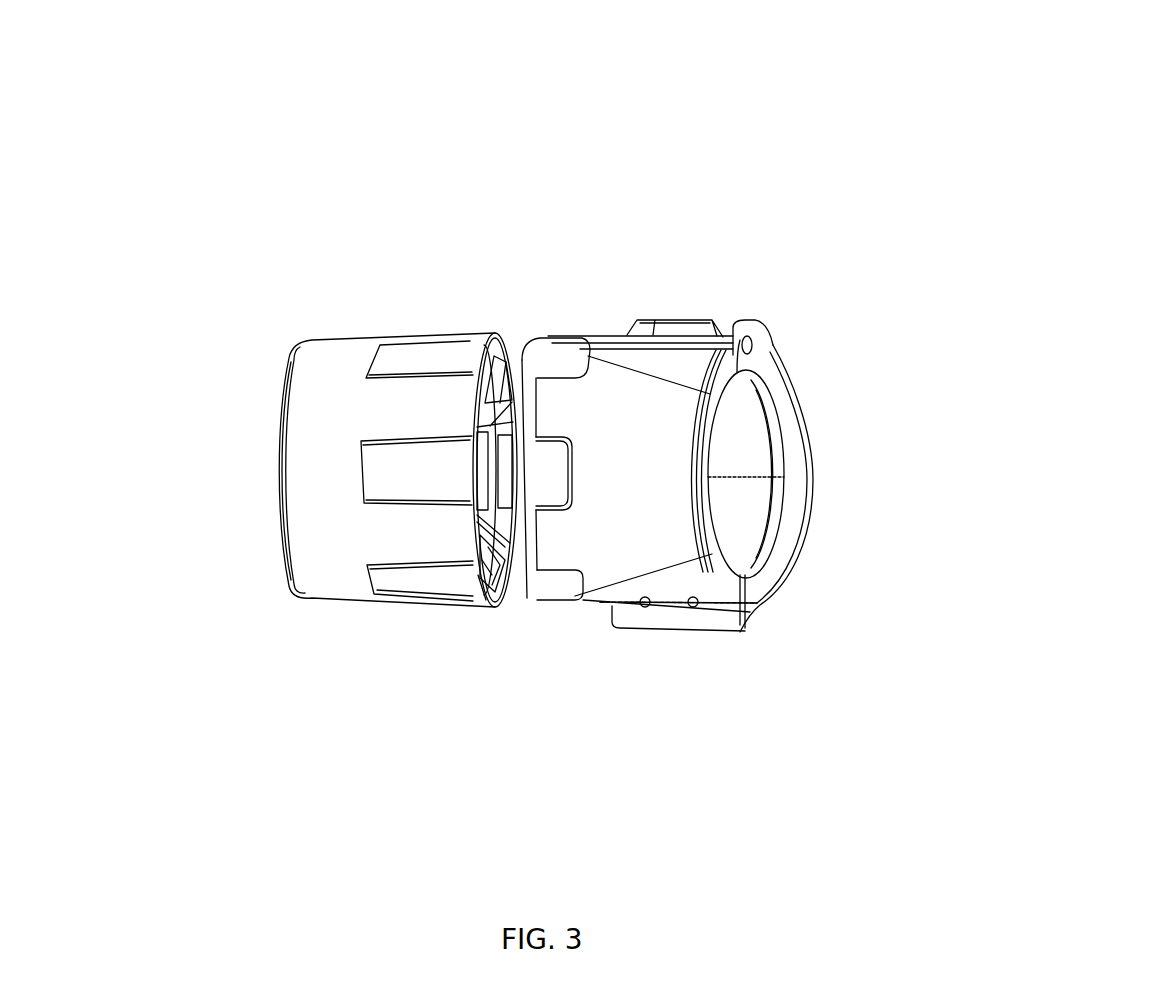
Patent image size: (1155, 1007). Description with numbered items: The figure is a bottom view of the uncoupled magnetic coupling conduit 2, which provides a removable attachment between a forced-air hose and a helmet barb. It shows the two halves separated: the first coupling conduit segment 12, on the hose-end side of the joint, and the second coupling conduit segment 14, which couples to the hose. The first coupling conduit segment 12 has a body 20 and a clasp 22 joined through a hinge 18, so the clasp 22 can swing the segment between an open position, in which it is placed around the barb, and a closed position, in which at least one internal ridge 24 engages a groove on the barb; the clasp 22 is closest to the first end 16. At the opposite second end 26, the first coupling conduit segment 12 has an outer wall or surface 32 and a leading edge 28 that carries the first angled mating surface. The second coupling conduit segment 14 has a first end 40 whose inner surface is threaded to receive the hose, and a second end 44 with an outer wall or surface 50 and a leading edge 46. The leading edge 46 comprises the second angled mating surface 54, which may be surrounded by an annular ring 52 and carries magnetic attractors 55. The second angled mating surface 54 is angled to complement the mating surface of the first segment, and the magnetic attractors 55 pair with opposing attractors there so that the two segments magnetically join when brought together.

The magnetic coupling conduit 2 is at (1048, 135).
The first coupling conduit segment 12 is at (823, 332).
The second coupling conduit segment 14 is at (368, 292).
The first end 16 is at (662, 528).
The hinge 18 is at (715, 322).
The body 20 is at (637, 597).
The clasp 22 is at (767, 462).
The internal ridge 24 is at (777, 415).
The second end 26 is at (568, 548).
The leading edge 28 is at (543, 350).
The outer wall or surface 32 is at (643, 476).
The first end 40 is at (303, 428).
The second end 44 is at (452, 350).
The leading edge 46 is at (517, 600).
The outer wall or surface 50 is at (393, 518).
The annular ring 52 is at (487, 555).
The second angled mating surface 54 is at (482, 542).
The magnetic attractors 55 is at (515, 350).